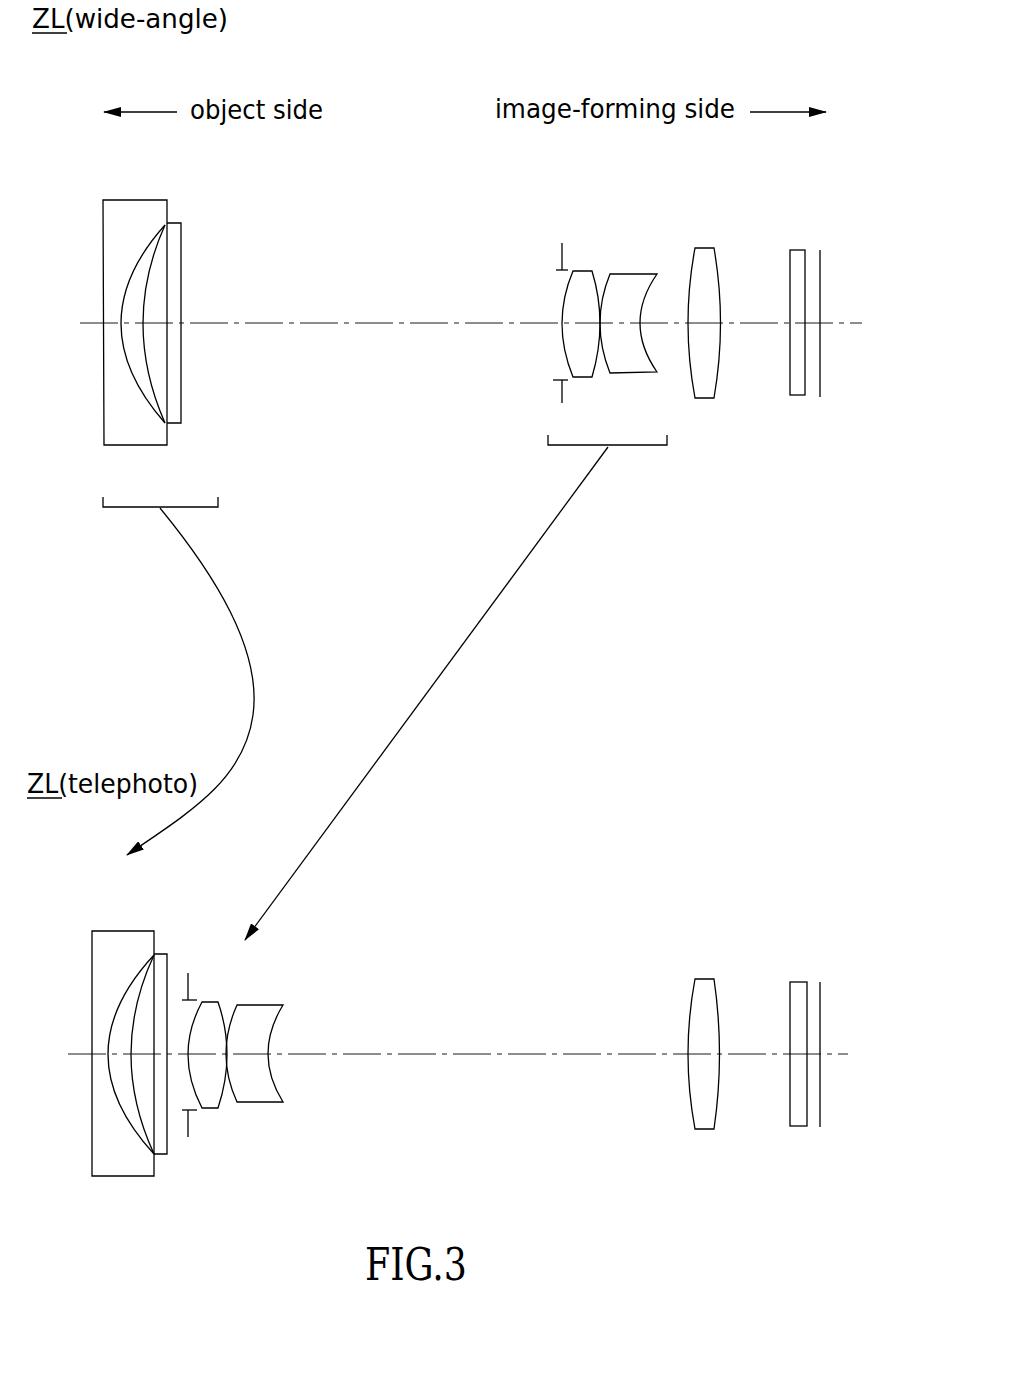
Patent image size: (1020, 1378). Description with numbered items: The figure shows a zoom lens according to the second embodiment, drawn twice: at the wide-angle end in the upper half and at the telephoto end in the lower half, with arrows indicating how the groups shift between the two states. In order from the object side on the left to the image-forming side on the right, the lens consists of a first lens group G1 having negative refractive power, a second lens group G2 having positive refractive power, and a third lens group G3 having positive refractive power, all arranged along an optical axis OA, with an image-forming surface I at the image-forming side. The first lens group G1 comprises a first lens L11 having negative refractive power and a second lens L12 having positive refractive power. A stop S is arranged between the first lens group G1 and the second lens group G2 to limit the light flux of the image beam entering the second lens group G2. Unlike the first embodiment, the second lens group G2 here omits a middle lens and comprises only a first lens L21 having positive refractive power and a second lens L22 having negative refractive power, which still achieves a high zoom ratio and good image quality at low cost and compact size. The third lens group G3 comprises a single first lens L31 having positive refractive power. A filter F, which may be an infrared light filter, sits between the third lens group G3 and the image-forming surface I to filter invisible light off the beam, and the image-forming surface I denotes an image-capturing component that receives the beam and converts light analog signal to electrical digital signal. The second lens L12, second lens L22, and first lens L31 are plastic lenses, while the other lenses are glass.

The first lens group G1 is at (144, 689).
The second lens group G2 is at (428, 687).
The third lens group G3 is at (702, 691).
The first lens L11 is at (130, 445).
The second lens L12 is at (177, 423).
The first lens L21 is at (582, 377).
The second lens L22 is at (640, 372).
The first lens L31 is at (703, 398).
The stop S is at (562, 403).
The filter F is at (795, 250).
The image-forming surface I is at (821, 263).
The optical axis OA is at (480, 688).